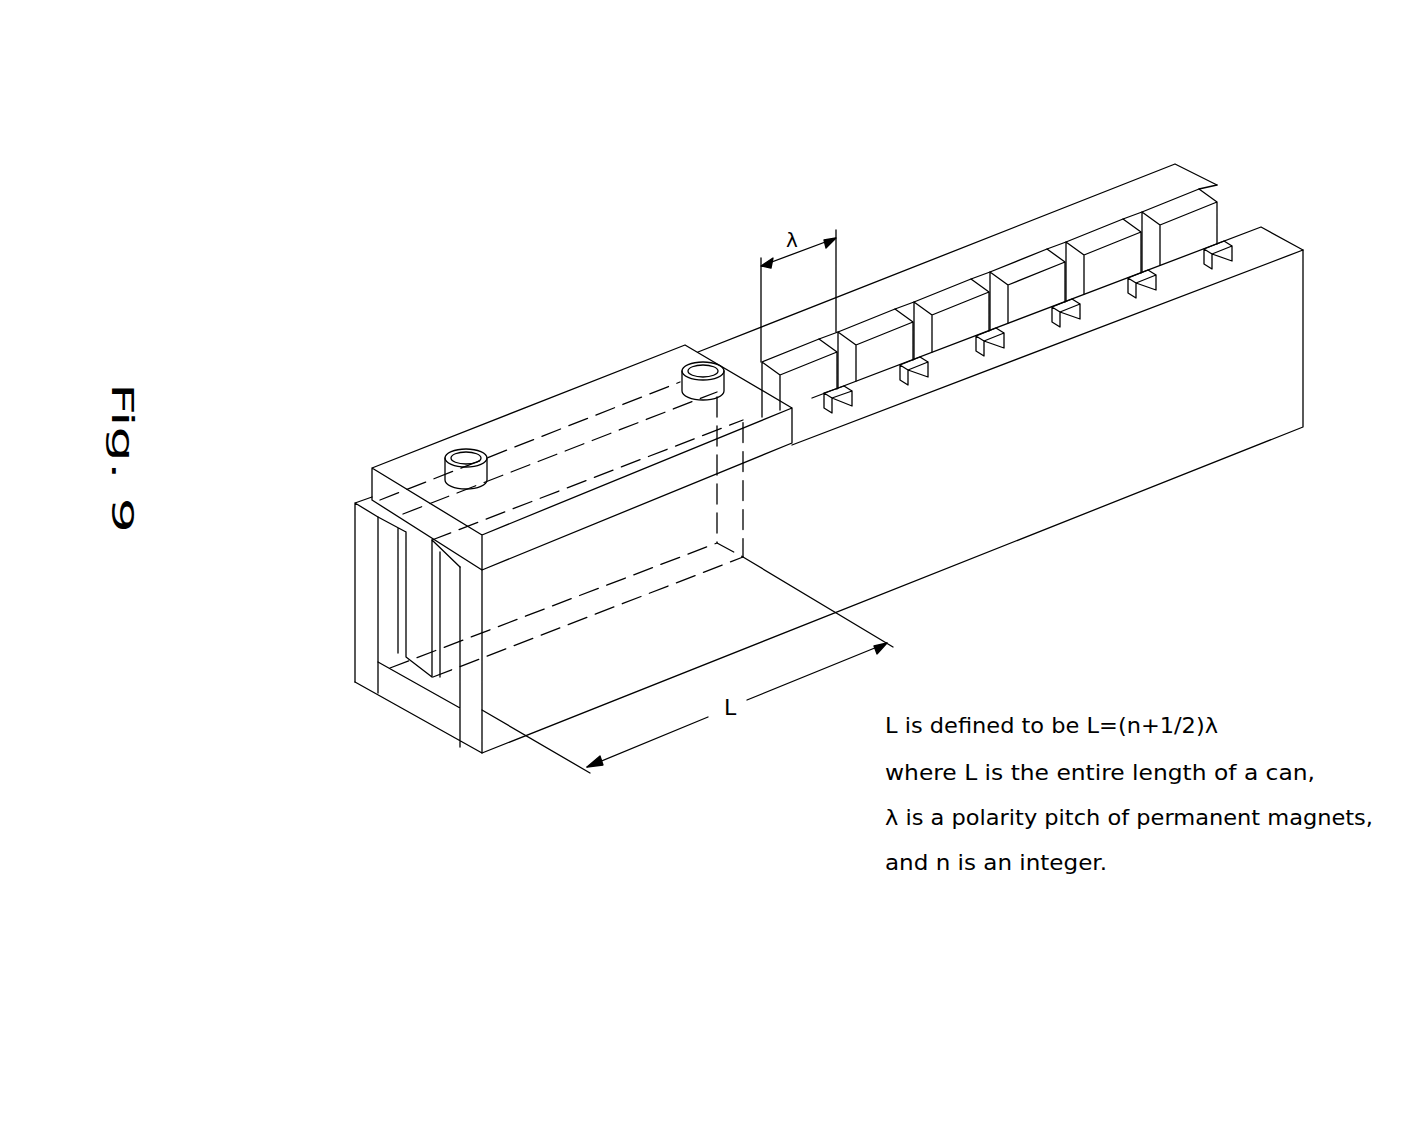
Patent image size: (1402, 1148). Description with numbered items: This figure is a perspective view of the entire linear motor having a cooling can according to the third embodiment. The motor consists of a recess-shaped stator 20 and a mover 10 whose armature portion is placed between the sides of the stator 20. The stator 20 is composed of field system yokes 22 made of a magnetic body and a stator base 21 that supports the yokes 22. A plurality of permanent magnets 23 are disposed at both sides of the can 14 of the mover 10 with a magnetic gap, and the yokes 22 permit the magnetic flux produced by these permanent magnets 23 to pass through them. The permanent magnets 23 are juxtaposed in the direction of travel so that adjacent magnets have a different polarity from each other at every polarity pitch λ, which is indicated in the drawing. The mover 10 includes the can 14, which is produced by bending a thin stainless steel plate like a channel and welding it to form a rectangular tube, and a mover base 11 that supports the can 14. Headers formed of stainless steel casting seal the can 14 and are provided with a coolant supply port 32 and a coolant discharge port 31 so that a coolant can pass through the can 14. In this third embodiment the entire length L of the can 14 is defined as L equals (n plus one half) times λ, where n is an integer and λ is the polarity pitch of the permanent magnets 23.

The mover 10 is at (542, 516).
The mover base 11 is at (612, 386).
The can 14 is at (405, 605).
The stator 20 is at (930, 584).
The stator base 21 is at (420, 705).
The field system yoke 22 is at (932, 290).
The permanent magnet 23 is at (882, 320).
The coolant discharge port 31 is at (466, 458).
The coolant supply port 32 is at (704, 370).